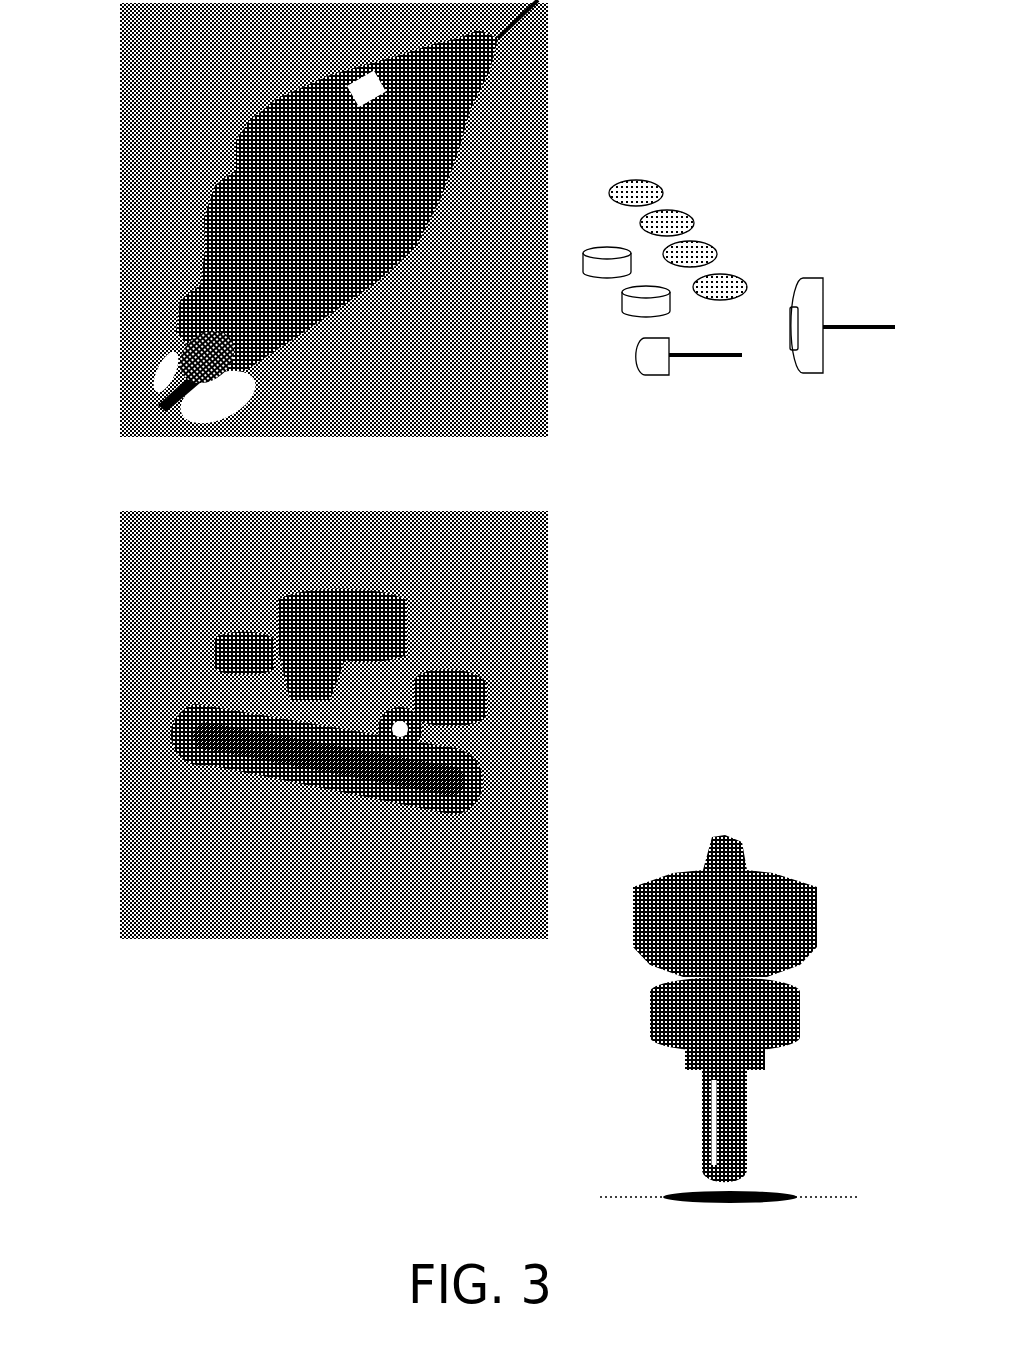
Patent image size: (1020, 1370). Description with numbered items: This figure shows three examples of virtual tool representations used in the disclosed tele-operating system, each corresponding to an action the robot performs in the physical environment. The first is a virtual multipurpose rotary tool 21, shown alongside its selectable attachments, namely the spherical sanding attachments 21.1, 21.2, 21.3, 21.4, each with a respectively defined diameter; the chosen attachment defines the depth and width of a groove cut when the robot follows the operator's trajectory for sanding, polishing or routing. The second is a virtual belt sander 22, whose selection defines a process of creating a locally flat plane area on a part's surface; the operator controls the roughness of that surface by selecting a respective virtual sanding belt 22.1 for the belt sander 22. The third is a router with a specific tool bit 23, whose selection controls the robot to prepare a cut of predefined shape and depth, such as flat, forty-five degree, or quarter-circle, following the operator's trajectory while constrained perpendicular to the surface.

The virtual rotary tool 21 is at (478, 95).
The spherical sanding attachment 21.1 is at (657, 183).
The spherical sanding attachment 21.2 is at (683, 212).
The spherical sanding attachment 21.3 is at (713, 244).
The spherical sanding attachment 21.4 is at (740, 276).
The belt sander 22 is at (487, 687).
The virtual sanding belt 22.1 is at (193, 737).
The tool bit 23 is at (817, 900).